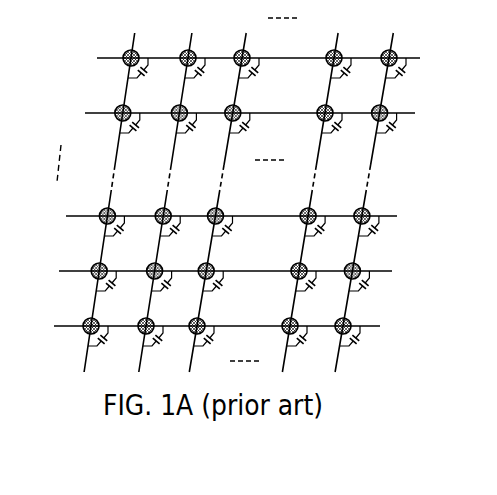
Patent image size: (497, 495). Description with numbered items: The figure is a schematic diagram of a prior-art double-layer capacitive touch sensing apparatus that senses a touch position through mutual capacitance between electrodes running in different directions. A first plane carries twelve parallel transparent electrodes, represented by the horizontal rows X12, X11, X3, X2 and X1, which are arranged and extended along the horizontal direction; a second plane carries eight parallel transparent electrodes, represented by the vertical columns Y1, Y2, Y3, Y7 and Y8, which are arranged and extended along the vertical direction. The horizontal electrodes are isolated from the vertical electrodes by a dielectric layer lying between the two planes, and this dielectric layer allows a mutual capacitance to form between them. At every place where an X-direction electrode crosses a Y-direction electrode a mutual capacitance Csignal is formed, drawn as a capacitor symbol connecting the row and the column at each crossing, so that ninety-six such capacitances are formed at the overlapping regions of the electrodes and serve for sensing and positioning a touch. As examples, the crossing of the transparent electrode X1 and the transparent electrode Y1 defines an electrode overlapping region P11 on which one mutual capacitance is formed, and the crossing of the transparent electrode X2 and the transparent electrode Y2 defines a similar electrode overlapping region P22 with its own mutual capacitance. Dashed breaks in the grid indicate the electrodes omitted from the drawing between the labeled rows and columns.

The transparent electrode X1 is at (197, 326).
The transparent electrode X2 is at (209, 271).
The transparent electrode X3 is at (213, 216).
The transparent electrode X11 is at (232, 113).
The transparent electrode X12 is at (241, 58).
The transparent electrode Y1 is at (115, 191).
The transparent electrode Y2 is at (168, 191).
The transparent electrode Y3 is at (220, 191).
The transparent electrode Y7 is at (317, 191).
The transparent electrode Y8 is at (368, 191).
The electrode overlapping region P11 is at (83, 330).
The electrode overlapping region P22 is at (146, 276).
The mutual capacitance Csignal is at (379, 238).